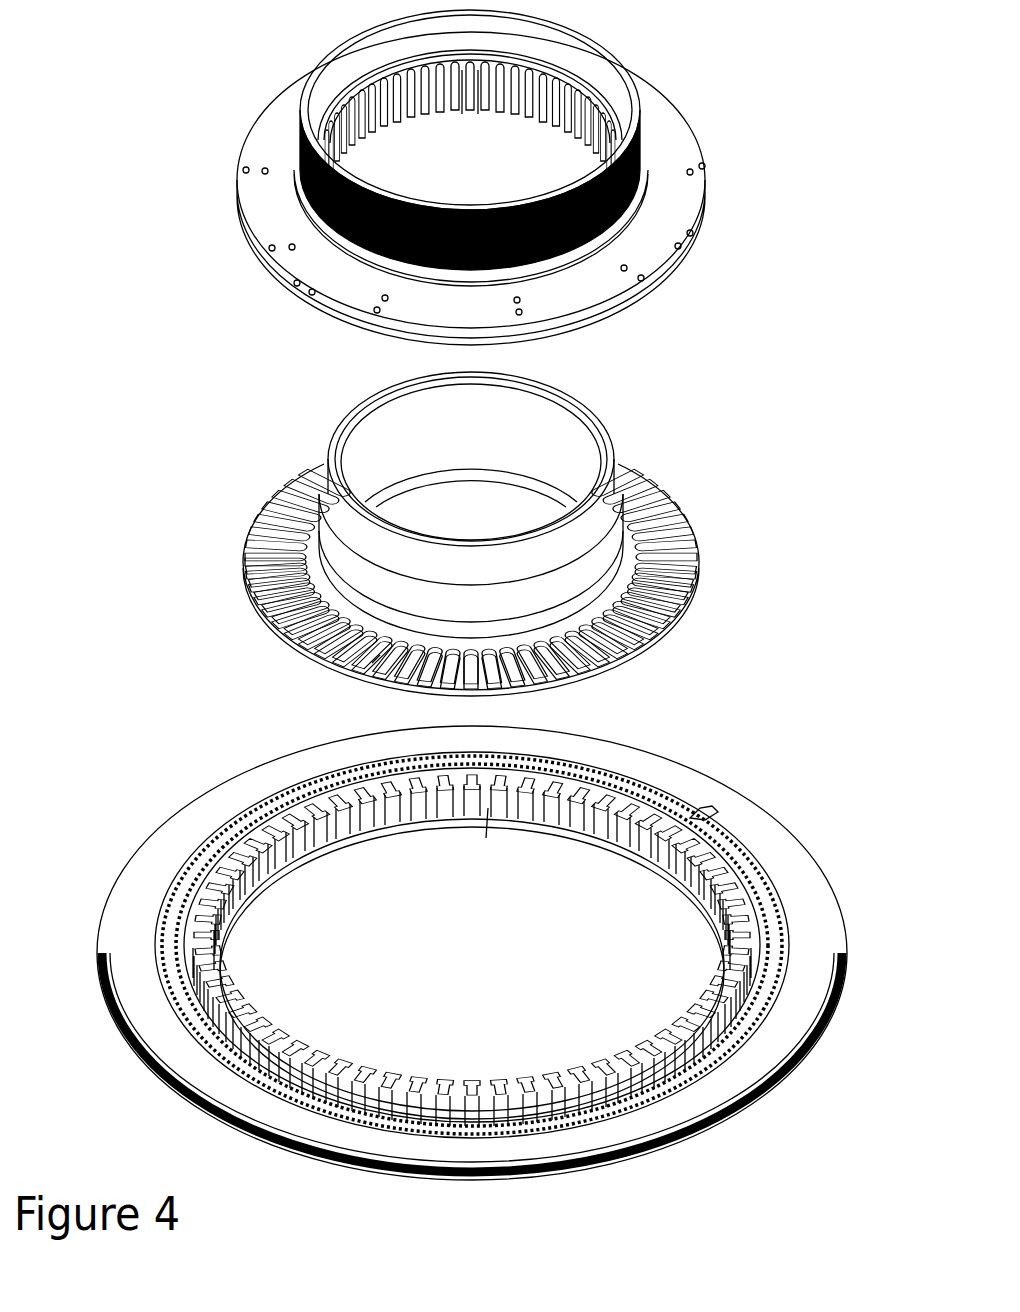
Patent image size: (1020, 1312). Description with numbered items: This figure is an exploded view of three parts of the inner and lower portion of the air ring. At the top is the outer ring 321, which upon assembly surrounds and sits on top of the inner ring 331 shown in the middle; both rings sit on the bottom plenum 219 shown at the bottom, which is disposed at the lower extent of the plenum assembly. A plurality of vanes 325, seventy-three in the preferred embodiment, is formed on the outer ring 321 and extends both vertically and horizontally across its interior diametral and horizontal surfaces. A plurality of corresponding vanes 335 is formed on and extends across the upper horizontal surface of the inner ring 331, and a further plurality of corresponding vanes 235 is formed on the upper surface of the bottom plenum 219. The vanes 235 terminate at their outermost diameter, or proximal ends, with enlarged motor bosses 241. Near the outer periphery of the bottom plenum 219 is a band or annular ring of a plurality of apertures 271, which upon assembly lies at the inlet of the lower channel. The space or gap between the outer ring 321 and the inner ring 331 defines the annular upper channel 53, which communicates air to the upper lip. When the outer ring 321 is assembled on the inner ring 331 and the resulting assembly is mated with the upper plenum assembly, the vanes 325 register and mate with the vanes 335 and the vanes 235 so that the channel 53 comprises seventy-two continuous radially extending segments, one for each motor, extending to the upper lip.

The outer ring 321 is at (680, 155).
The vanes 325 is at (530, 78).
The annular upper channel 53 is at (448, 83).
The inner ring 331 is at (578, 405).
The vanes 335 is at (322, 653).
The bottom plenum 219 is at (763, 820).
The apertures 271 is at (776, 1008).
The motor bosses 241 is at (222, 862).
The vanes 235 is at (447, 807).